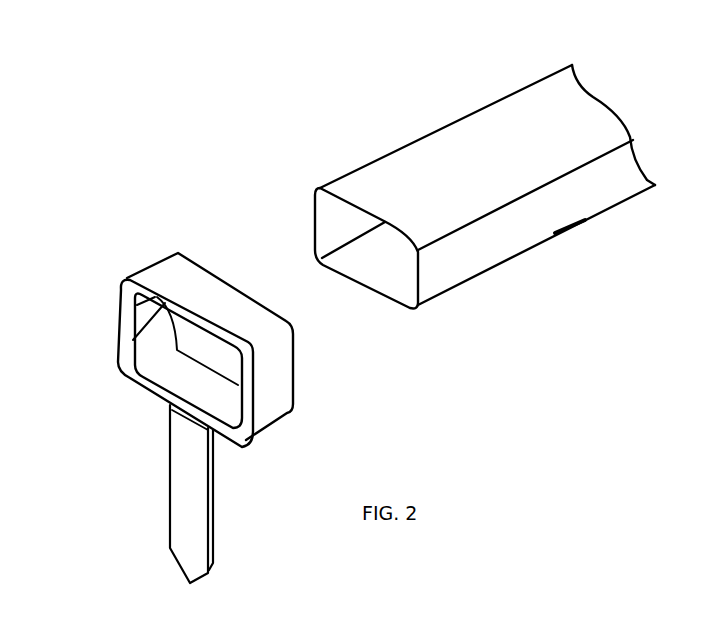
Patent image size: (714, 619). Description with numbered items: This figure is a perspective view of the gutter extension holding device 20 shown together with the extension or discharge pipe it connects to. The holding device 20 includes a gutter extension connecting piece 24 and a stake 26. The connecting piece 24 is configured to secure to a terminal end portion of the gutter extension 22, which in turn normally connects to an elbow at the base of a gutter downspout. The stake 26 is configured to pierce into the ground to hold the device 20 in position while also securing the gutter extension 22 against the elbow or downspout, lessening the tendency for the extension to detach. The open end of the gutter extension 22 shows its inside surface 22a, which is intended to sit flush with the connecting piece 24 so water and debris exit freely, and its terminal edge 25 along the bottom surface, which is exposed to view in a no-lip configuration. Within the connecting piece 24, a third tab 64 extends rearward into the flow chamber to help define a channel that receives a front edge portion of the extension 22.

The gutter extension holding device 20 is at (97, 199).
The gutter extension 22 is at (445, 143).
The inside surface of the extension piece 22a is at (378, 270).
The gutter extension connecting piece 24 is at (156, 237).
The terminal edge of a bottom surface of the extension piece 25 is at (395, 310).
The stake 26 is at (182, 487).
The third tab 64 is at (150, 313).